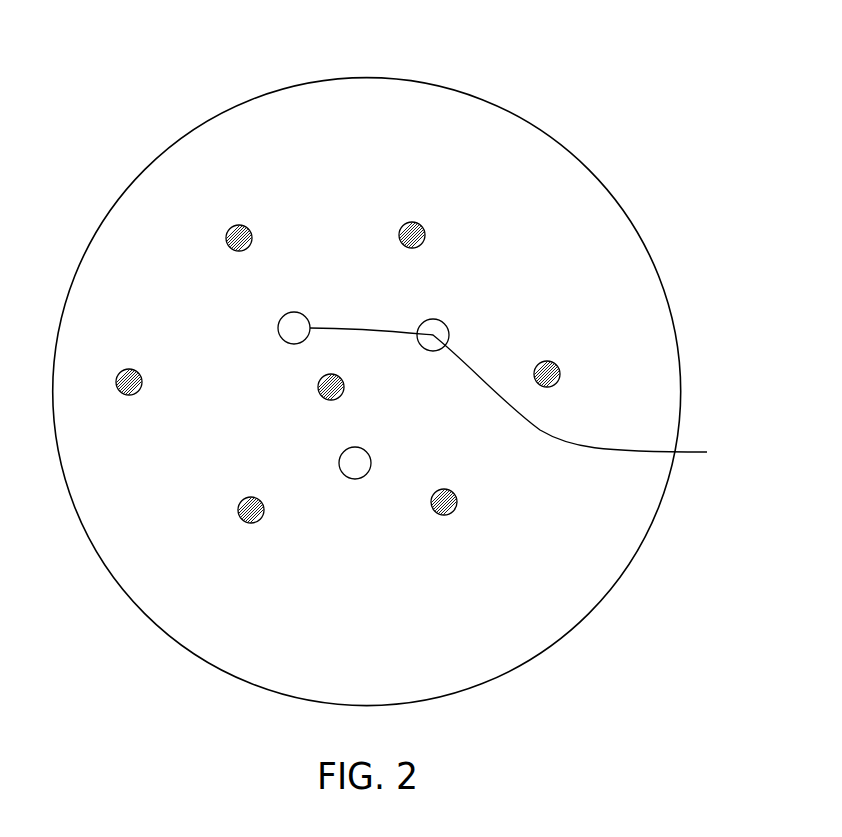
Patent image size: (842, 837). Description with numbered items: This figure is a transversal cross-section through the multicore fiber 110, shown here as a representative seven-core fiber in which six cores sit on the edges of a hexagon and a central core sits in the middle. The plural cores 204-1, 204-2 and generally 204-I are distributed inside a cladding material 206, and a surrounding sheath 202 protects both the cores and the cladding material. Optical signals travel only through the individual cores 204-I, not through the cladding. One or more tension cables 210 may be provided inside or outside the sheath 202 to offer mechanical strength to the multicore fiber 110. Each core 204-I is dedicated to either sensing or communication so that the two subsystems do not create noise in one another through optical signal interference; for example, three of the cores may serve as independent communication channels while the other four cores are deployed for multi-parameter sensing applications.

The multicore fiber 110 is at (601, 37).
The sheath 202 is at (616, 178).
The core 204-1 is at (264, 510).
The core 204-2 is at (560, 374).
The core 204-I is at (457, 502).
The cladding material 206 is at (588, 324).
The tension cable 210 is at (530, 396).